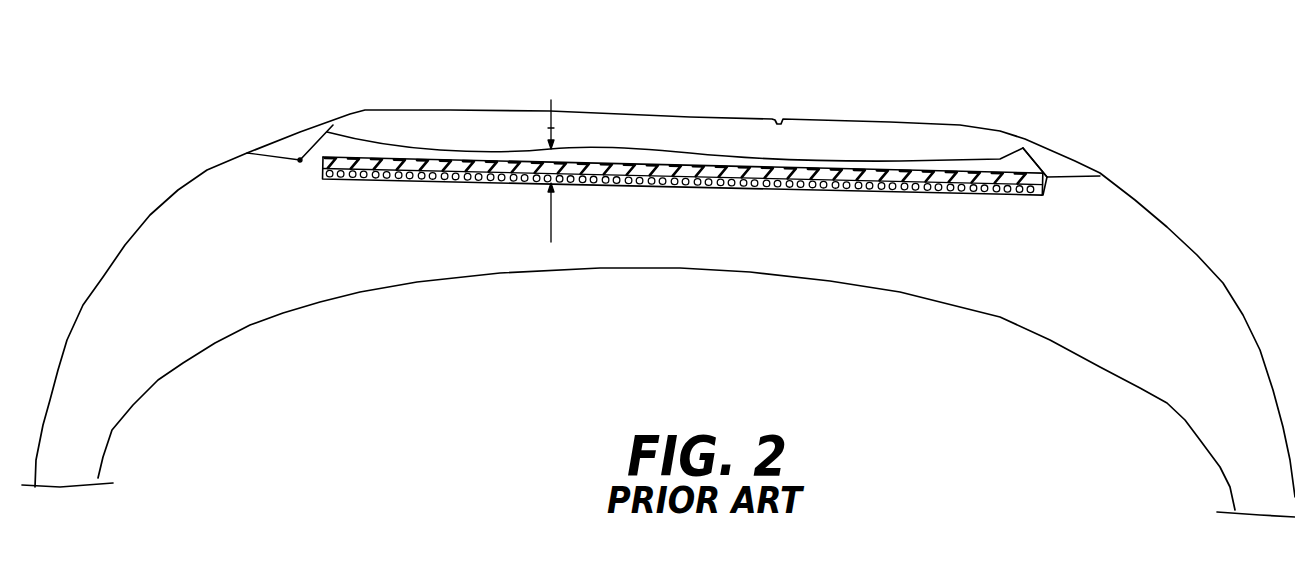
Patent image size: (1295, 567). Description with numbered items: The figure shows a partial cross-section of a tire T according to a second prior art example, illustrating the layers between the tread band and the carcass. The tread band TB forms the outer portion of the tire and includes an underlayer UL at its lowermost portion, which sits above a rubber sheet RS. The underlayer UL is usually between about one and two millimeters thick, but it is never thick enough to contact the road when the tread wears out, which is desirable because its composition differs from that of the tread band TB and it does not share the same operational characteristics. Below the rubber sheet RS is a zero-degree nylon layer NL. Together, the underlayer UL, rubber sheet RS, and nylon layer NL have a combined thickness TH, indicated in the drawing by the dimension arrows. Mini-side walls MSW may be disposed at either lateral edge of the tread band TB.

The tire T is at (752, 79).
The tread band TB is at (898, 122).
The underlayer UL is at (975, 160).
The nylon layer NL is at (748, 187).
The rubber sheet RS is at (1038, 187).
The combined thickness TH is at (551, 153).
The mini-side walls MSW is at (1060, 168).